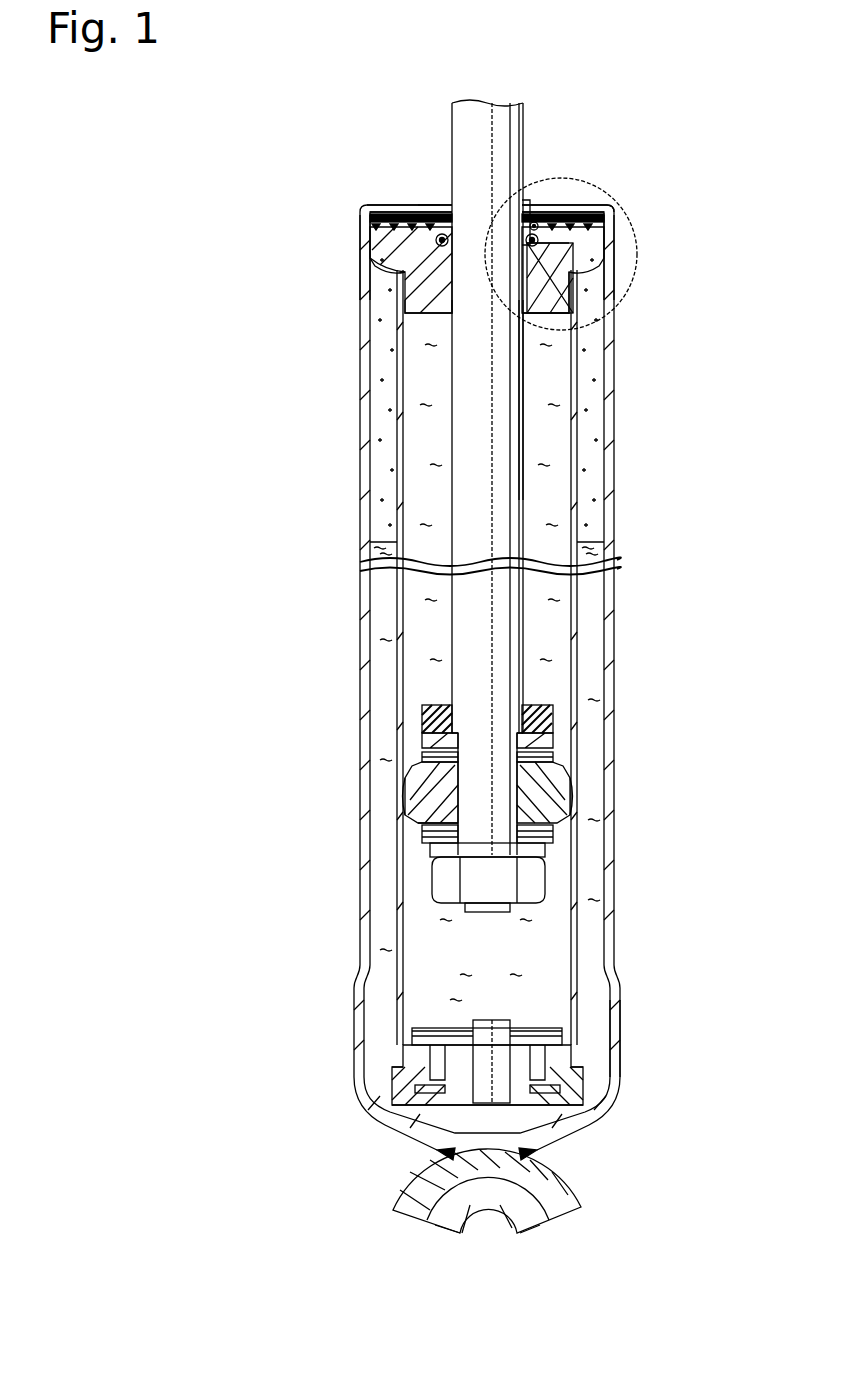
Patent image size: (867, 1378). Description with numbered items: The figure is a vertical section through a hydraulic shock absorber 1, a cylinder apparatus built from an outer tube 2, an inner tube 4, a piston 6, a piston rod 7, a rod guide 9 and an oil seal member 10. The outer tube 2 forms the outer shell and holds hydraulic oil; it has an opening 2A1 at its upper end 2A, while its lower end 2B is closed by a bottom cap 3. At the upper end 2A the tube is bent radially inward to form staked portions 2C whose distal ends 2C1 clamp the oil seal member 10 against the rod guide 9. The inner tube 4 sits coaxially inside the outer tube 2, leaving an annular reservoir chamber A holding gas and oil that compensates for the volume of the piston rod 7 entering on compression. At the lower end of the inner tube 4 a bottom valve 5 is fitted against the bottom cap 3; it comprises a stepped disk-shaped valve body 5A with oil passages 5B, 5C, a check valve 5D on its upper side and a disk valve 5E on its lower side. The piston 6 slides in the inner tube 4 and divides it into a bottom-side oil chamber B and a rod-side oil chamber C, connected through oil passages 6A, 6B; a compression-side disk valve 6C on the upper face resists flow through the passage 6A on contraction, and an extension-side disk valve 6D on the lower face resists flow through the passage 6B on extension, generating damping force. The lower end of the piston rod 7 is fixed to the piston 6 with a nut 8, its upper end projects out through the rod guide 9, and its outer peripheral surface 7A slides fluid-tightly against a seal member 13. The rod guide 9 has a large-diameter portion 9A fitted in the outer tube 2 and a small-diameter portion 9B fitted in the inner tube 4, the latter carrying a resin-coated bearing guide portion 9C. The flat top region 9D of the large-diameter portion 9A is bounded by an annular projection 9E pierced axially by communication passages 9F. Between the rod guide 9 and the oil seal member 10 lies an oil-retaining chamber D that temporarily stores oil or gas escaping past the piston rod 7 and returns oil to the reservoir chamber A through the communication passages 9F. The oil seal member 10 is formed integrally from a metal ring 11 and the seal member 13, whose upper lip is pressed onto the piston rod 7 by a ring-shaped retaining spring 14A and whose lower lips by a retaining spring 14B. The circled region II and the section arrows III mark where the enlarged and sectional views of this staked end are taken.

The hydraulic shock absorber 1 is at (322, 567).
The outer tube 2 is at (365, 633).
The one end of outer tube 2A is at (362, 237).
The opening 2A1 is at (418, 210).
The other end of outer tube 2B is at (613, 1027).
The staked portions 2C is at (598, 208).
The distal ends of staked portions 2C1 is at (577, 212).
The bottom cap 3 is at (553, 1132).
The inner tube 4 is at (576, 478).
The bottom valve 5 is at (510, 1030).
The valve body 5A is at (398, 1055).
The oil passage 5B is at (547, 1062).
The oil passage 5C is at (423, 1062).
The check valve 5D is at (437, 1027).
The disk valve 5E is at (590, 1097).
The piston 6 is at (558, 808).
The oil passage 6A is at (415, 797).
The oil passage 6B is at (570, 788).
The compression-side disk valve 6C is at (428, 752).
The extension-side disk valve 6D is at (547, 842).
The piston rod 7 is at (470, 440).
The outer peripheral surface of piston rod 7A is at (525, 390).
The nut 8 is at (447, 882).
The rod guide 9 is at (418, 282).
The large-diameter portion 9A is at (387, 257).
The small-diameter portion 9B is at (572, 320).
The guide portion 9C is at (443, 277).
The top region 9D is at (440, 237).
The annular projection 9E is at (370, 222).
The communication passages 9F is at (580, 235).
The oil seal member 10 is at (425, 198).
The metal ring 11 is at (613, 208).
The seal member 13 is at (537, 225).
The retaining spring 14A is at (529, 200).
The retaining spring 14B is at (560, 294).
The reservoir chamber A is at (592, 612).
The bottom-side oil chamber B is at (530, 936).
The rod-side oil chamber C is at (548, 441).
The oil-retaining chamber D is at (545, 257).
The enlarged view region II is at (636, 228).
The section line III is at (333, 164).